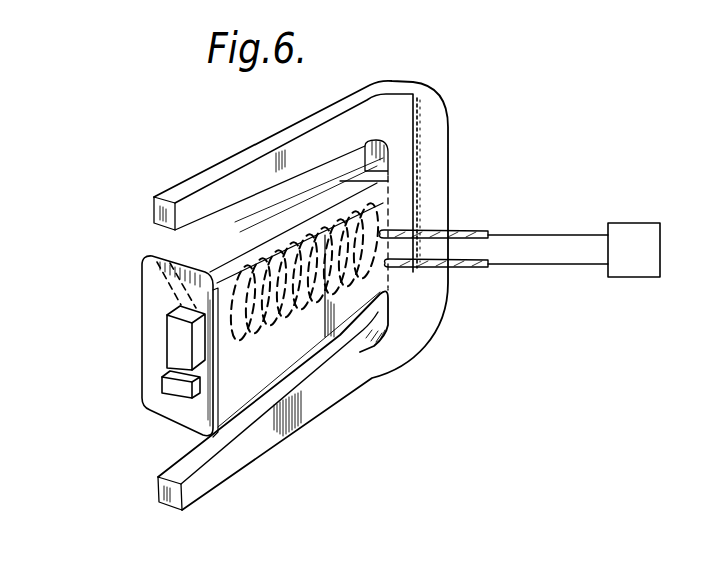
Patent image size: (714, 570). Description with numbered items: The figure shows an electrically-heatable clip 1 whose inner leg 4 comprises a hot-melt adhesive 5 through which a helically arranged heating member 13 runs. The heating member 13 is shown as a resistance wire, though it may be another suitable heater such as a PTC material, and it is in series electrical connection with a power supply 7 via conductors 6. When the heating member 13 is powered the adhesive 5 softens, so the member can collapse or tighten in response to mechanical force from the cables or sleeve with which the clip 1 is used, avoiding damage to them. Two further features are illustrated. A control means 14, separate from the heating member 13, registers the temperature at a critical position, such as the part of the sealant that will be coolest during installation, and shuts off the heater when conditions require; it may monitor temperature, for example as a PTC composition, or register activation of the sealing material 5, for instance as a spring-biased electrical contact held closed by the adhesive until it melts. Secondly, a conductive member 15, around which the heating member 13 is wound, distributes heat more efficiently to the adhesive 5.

The clip 1 is at (155, 195).
The inner leg 4 is at (136, 287).
The hot-melt adhesive 5 is at (158, 410).
The conductors 6 is at (476, 262).
The power supply 7 is at (636, 238).
The heating member 13 is at (150, 258).
The control means 14 is at (160, 399).
The conductive member 15 is at (162, 344).